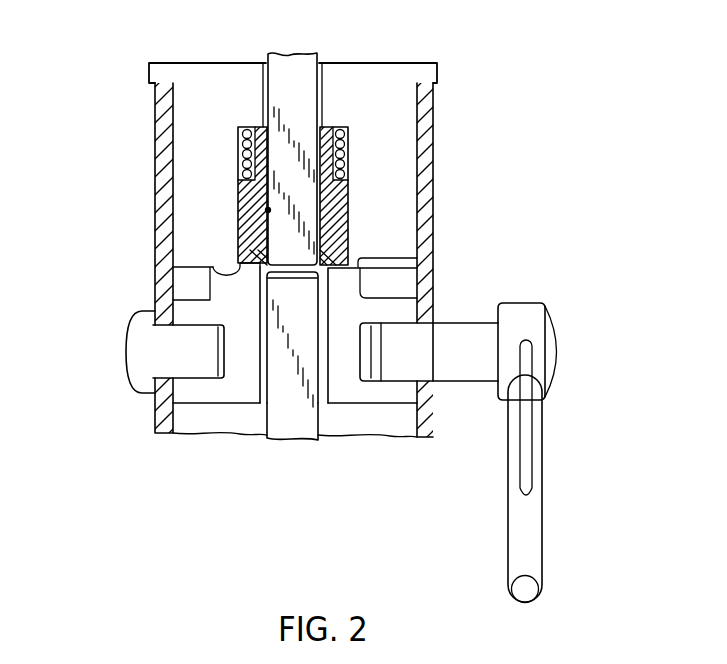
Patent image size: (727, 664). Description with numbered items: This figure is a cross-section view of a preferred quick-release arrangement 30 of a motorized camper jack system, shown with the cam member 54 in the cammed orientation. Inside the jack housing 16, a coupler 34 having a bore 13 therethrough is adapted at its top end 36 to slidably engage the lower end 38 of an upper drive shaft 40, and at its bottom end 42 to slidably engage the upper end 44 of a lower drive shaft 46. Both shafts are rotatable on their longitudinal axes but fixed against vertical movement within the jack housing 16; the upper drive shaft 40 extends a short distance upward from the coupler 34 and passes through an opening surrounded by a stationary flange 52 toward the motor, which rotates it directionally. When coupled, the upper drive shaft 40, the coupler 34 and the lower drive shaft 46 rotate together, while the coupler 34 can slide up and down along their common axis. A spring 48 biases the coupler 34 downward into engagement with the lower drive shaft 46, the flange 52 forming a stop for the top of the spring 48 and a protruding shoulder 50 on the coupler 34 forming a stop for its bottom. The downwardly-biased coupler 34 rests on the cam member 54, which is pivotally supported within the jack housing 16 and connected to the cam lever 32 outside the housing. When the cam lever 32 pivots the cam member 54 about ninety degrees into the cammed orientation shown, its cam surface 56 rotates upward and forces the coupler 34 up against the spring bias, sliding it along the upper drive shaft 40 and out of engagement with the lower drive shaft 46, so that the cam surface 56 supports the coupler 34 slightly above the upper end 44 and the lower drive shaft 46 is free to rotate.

The quick-release arrangement 30 is at (578, 117).
The jack housing 16 is at (155, 213).
The stationary flange 52 is at (252, 112).
The upper drive shaft 40 is at (298, 72).
The bore 13 is at (268, 210).
The coupler 34 is at (348, 217).
The top end 36 is at (325, 128).
The spring 48 is at (343, 143).
The protruding shoulder 50 is at (350, 175).
The lower end 38 is at (348, 242).
The bottom end 42 is at (228, 272).
The upper end 44 is at (292, 290).
The lower drive shaft 46 is at (290, 423).
The cam surface 56 is at (367, 312).
The cam member 54 is at (410, 298).
The cam lever 32 is at (525, 520).